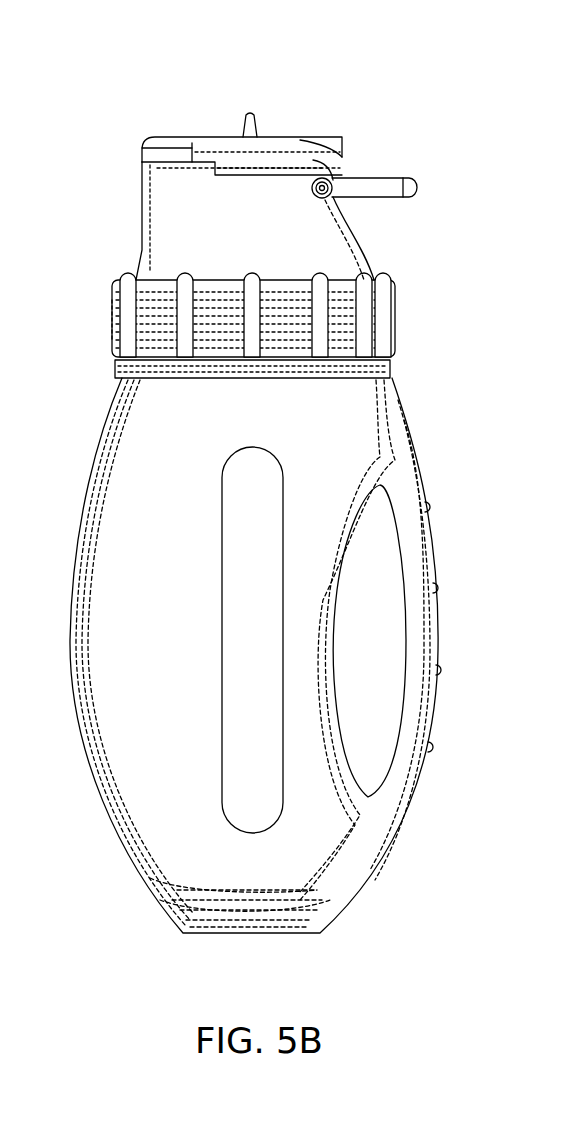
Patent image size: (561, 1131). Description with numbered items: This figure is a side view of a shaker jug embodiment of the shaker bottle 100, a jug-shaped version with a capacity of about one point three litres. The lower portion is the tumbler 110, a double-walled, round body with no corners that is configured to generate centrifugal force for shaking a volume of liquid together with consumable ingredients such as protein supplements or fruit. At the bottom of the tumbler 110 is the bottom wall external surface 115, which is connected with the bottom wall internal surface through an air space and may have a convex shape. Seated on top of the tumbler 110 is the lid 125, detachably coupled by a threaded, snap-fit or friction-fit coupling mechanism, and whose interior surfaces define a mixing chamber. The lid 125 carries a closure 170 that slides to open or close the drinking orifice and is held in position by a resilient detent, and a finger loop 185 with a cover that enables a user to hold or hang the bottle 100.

The shaker bottle 100 is at (89, 94).
The tumbler 110 is at (72, 662).
The bottom wall external surface 115 is at (320, 930).
The lid 125 is at (213, 243).
The closure 170 is at (256, 128).
The finger loop 185 is at (382, 186).